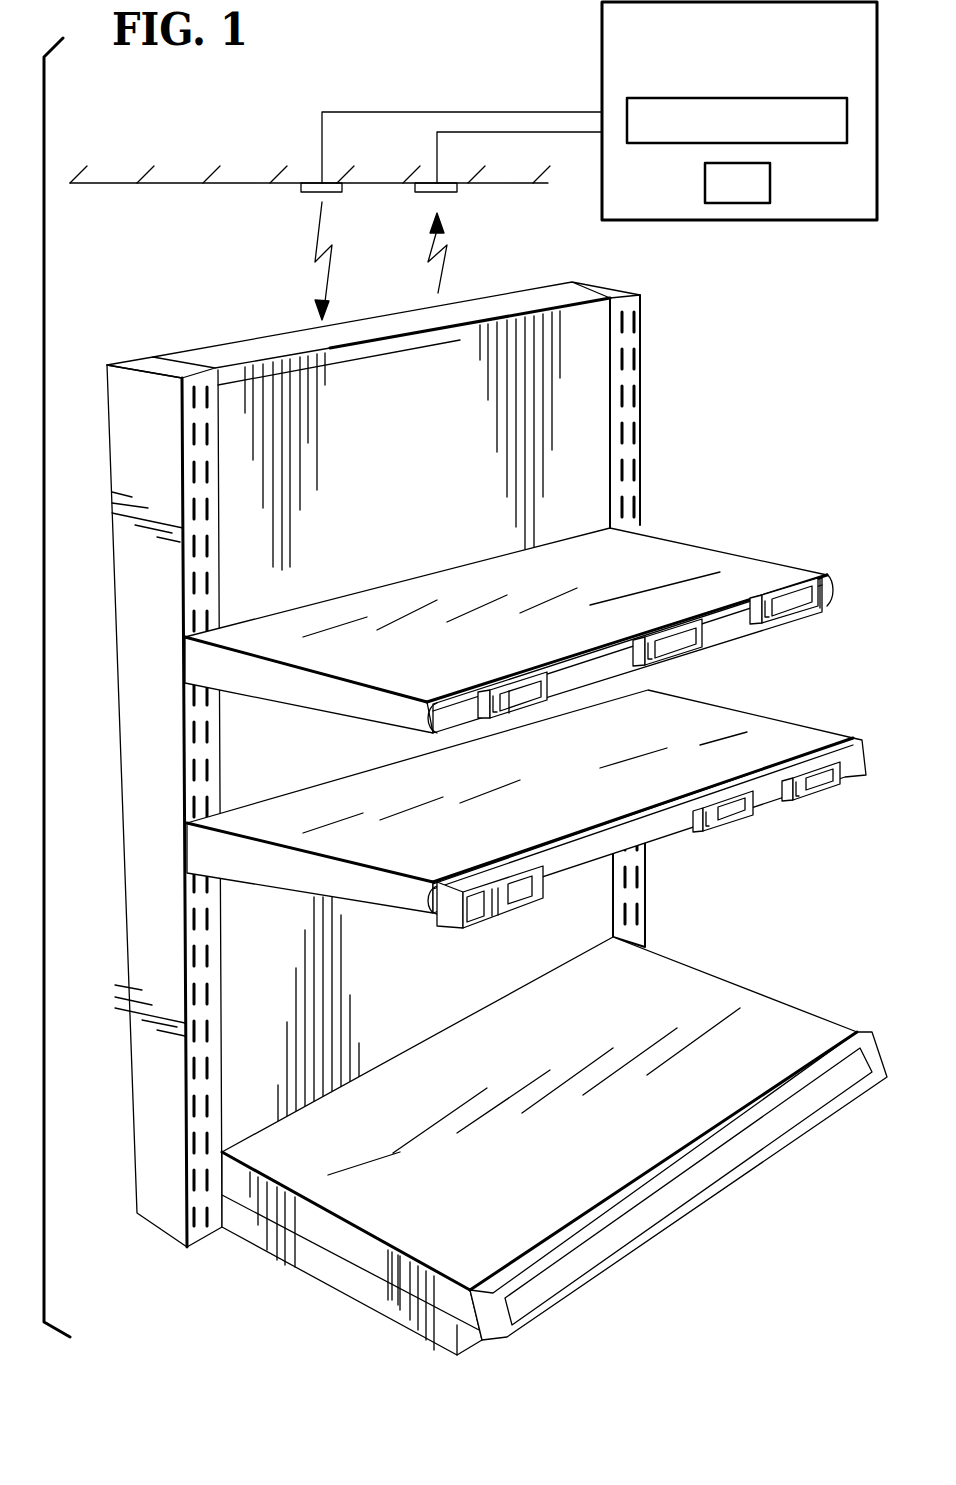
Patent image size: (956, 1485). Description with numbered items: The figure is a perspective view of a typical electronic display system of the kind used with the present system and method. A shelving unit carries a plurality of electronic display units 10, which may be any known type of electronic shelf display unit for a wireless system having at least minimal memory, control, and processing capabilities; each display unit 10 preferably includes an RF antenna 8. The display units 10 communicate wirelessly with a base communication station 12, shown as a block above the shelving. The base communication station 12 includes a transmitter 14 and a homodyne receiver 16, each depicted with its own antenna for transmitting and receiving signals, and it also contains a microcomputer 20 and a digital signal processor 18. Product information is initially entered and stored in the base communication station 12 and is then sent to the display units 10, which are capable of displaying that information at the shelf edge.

The RF antenna 8 is at (512, 692).
The electronic display unit 10 is at (556, 717).
The base communication station 12 is at (601, 47).
The transmitter 14 is at (302, 197).
The homodyne receiver 16 is at (457, 192).
The digital signal processor 18 is at (705, 190).
The microcomputer 20 is at (802, 143).